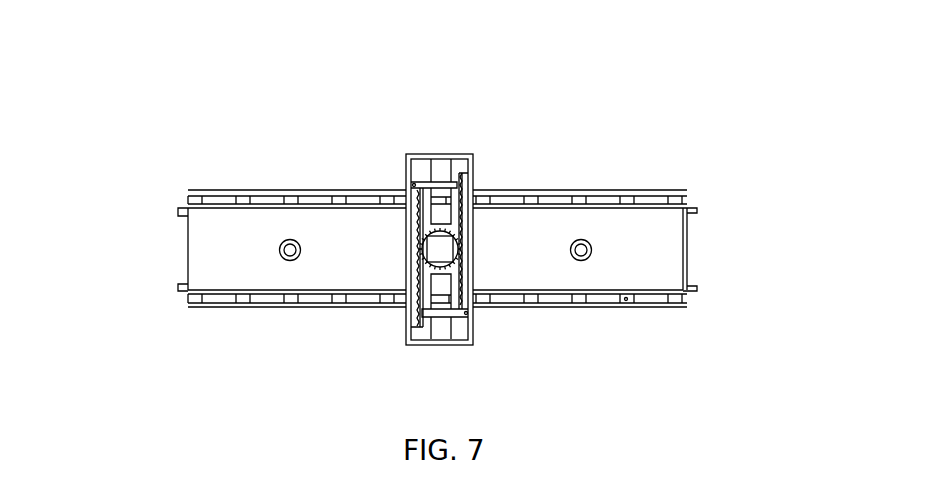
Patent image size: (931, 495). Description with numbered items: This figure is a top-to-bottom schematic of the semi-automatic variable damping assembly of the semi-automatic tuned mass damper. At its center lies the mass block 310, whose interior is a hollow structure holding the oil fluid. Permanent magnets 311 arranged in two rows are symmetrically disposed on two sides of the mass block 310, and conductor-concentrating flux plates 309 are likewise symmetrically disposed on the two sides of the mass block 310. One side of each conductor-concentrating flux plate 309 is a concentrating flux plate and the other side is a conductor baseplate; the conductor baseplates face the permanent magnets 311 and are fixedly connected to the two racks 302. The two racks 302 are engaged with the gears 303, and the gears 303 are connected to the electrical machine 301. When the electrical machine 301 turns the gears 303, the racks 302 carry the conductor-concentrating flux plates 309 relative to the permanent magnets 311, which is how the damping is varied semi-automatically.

The electrical machine 301 is at (440, 249).
The racks 302 is at (413, 247).
The gears 303 is at (433, 268).
The conductor-concentrating flux plates 309 is at (630, 189).
The mass block 310 is at (621, 242).
The permanent magnets 311 is at (630, 302).